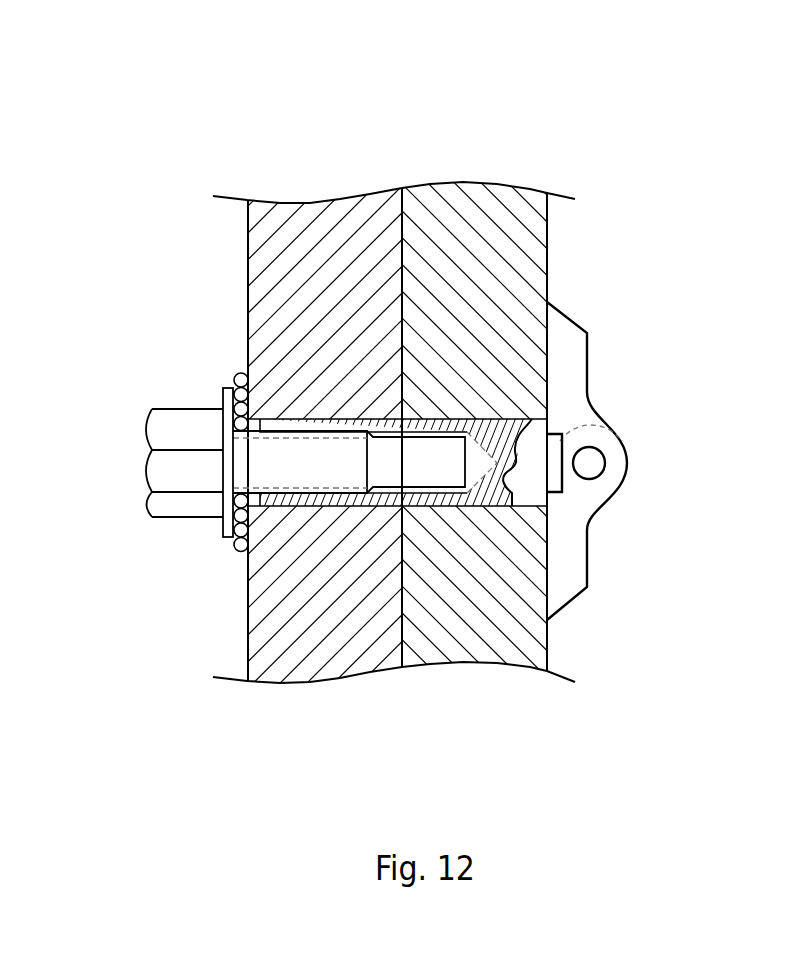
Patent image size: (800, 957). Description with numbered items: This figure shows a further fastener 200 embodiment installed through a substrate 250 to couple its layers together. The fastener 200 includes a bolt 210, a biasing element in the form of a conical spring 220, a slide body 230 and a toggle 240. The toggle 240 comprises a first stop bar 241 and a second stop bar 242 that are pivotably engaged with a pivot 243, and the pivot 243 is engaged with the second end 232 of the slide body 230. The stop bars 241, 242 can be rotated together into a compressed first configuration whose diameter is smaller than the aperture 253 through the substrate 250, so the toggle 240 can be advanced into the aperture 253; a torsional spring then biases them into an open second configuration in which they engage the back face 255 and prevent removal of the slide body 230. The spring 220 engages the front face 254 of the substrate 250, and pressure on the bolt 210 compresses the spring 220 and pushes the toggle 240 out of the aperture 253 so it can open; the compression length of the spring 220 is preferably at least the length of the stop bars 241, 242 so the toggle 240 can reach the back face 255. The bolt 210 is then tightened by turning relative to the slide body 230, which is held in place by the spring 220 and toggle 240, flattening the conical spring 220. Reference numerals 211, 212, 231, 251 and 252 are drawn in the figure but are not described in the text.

The fastener 200 is at (172, 204).
The bolt 210 is at (124, 553).
The bolt shank 211 is at (260, 465).
The bolt head 212 is at (155, 480).
The conical spring 220 is at (239, 561).
The slide body 230 is at (461, 506).
The hole in first block 231 is at (281, 504).
The second end 232 is at (555, 470).
The toggle 240 is at (656, 444).
The first stop bar 241 is at (637, 426).
The second stop bar 242 is at (598, 532).
The pivot 243 is at (588, 462).
The substrate 250 is at (385, 122).
The first block 251 is at (322, 213).
The second block 252 is at (485, 200).
The aperture 253 is at (499, 414).
The front face 254 is at (248, 263).
The back face 255 is at (548, 242).